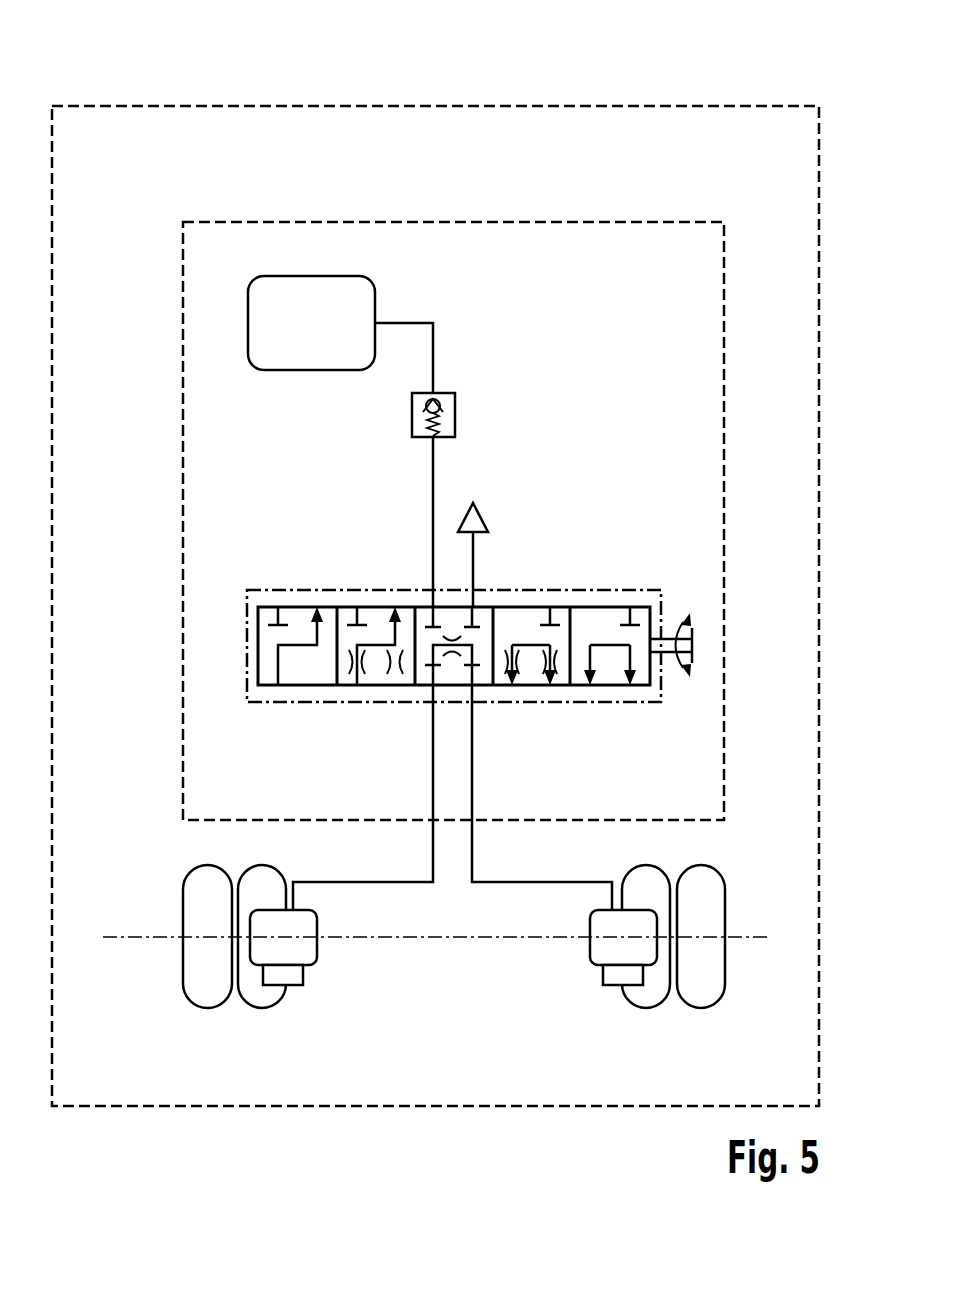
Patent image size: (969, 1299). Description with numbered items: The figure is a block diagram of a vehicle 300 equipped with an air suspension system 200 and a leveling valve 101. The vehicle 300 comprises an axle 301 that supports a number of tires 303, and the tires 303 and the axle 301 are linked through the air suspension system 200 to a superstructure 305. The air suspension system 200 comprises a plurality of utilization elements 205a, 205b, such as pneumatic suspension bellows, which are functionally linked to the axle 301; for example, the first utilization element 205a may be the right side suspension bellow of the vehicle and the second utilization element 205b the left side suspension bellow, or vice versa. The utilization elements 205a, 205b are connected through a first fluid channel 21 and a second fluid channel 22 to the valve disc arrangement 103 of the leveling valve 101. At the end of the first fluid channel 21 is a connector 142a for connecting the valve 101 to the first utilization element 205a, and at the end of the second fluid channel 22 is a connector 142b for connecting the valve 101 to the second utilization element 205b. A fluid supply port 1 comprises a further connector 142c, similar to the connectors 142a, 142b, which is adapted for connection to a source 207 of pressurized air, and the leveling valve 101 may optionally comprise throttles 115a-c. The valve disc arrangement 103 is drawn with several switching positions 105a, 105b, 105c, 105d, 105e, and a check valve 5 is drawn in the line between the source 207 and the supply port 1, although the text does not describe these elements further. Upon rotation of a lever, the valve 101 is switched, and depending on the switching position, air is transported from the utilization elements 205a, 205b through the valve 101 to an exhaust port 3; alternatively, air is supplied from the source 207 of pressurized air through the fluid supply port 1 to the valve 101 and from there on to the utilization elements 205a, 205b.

The vehicle 300 is at (732, 78).
The superstructure 305 is at (566, 210).
The source of pressurized air 207 is at (375, 300).
The check valve 5 is at (475, 410).
The air suspension system 200 is at (607, 445).
The fluid supply port 1 is at (433, 483).
The exhaust port 3 is at (473, 558).
The leveling valve 101 is at (350, 590).
The valve disc arrangement 103 is at (297, 605).
The first valve position 105a is at (297, 672).
The second valve position 105b is at (375, 672).
The third valve position 105c is at (455, 680).
The fourth valve position 105d is at (535, 672).
The fifth valve position 105e is at (614, 672).
The throttles 115a-c is at (453, 632).
The connector 142a is at (474, 700).
The connector 142b is at (434, 698).
The connector 142c is at (432, 590).
The first fluid channel 21 is at (472, 856).
The second fluid channel 22 is at (433, 856).
The first utilization element 205a is at (570, 965).
The second utilization element 205b is at (340, 965).
The axle 301 is at (113, 932).
The tires 303 is at (703, 1008).